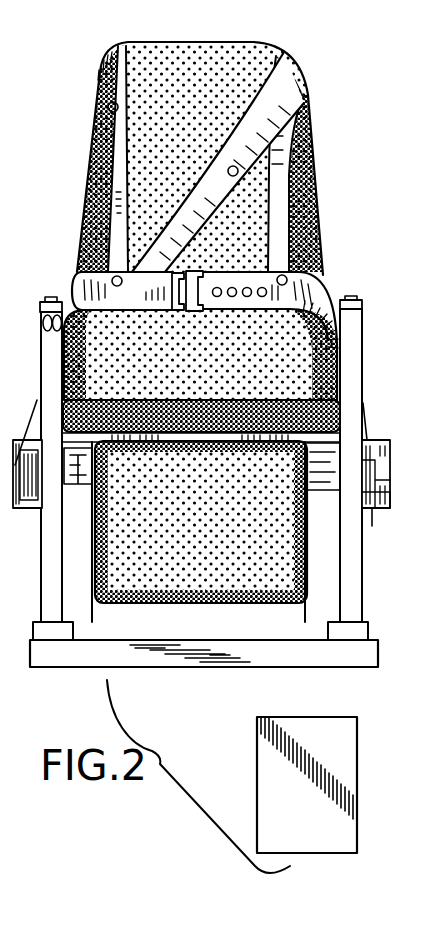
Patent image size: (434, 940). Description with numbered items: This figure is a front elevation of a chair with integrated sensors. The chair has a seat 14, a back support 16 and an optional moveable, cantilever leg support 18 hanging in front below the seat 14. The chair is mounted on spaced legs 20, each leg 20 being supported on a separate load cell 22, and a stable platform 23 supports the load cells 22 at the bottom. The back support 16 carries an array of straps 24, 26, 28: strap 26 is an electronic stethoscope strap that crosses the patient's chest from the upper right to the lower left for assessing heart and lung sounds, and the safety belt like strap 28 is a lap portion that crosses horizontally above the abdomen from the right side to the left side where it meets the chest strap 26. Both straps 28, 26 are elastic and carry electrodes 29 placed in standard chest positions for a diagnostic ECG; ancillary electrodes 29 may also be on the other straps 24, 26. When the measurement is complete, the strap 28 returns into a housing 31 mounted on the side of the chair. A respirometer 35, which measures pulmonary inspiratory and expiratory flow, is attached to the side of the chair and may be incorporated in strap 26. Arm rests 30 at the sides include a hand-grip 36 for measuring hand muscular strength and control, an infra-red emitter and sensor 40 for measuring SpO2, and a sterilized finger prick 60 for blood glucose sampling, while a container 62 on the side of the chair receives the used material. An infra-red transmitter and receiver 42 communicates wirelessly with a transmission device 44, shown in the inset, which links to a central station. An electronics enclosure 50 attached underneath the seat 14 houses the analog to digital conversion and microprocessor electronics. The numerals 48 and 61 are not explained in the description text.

The seat 14 is at (167, 397).
The back support 16 is at (198, 100).
The cantilever leg support 18 is at (233, 546).
The legs 20 is at (50, 597).
The load cell 22 is at (32, 628).
The platform 23 is at (263, 652).
The strap 24 is at (113, 140).
The electronic stethoscope strap 26 is at (197, 214).
The safety belt like strap 28 is at (228, 279).
The electrodes 29 is at (220, 303).
The arm rest 30 is at (345, 307).
The housing 31 is at (381, 533).
The respirometer 35 is at (240, 178).
The hand-grip 36 is at (43, 330).
The infra-red emitter and sensor 40 is at (340, 297).
The infra-red transmitter and receiver 42 is at (377, 440).
The transmission device 44 is at (322, 826).
The base member 48 is at (15, 654).
The electronics enclosure 50 is at (2, 470).
The finger prick 60 is at (21, 494).
The left side bracket plate 61 is at (21, 494).
The container 62 is at (362, 496).